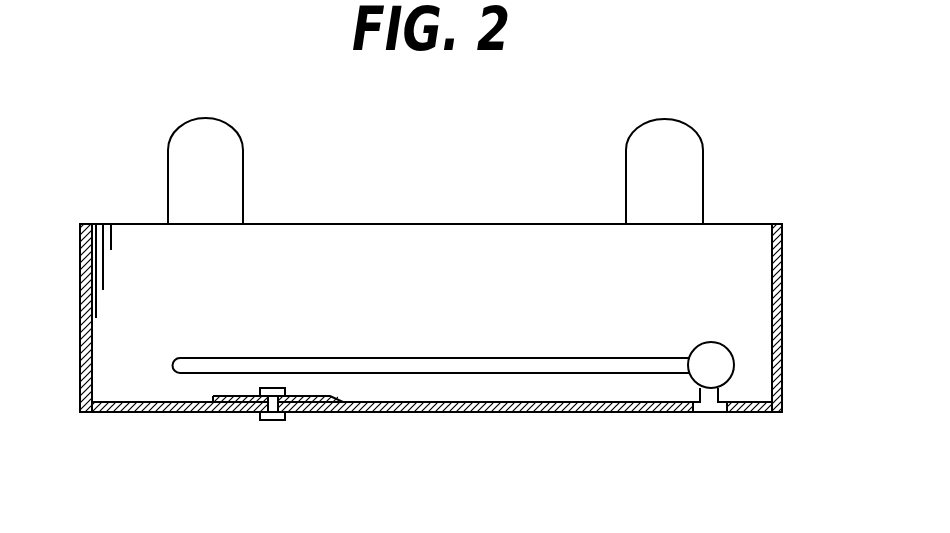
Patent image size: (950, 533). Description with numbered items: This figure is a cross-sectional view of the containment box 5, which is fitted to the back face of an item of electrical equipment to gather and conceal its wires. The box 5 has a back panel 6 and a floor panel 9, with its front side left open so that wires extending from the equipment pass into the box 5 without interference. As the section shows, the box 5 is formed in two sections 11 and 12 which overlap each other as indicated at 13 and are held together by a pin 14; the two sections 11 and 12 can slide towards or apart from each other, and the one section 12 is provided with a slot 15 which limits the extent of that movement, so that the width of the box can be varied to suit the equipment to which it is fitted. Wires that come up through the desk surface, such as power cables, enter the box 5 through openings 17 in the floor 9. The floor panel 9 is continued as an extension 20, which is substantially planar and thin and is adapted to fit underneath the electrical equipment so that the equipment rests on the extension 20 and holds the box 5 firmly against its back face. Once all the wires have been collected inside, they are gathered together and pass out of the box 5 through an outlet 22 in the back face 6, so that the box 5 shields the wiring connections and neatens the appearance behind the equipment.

The containment box 5 is at (433, 323).
The back panel 6 is at (633, 413).
The floor panel 9 is at (556, 248).
The first box section 11 is at (140, 413).
The second box section 12 is at (422, 413).
The overlap 13 is at (245, 420).
The pin 14 is at (273, 418).
The slot 15 is at (310, 410).
The floor openings 17 is at (705, 355).
The floor panel extension 20 is at (665, 132).
The outlet 22 is at (707, 413).